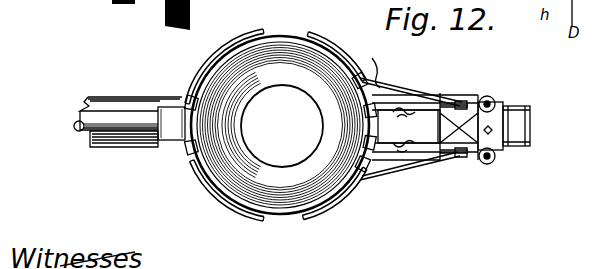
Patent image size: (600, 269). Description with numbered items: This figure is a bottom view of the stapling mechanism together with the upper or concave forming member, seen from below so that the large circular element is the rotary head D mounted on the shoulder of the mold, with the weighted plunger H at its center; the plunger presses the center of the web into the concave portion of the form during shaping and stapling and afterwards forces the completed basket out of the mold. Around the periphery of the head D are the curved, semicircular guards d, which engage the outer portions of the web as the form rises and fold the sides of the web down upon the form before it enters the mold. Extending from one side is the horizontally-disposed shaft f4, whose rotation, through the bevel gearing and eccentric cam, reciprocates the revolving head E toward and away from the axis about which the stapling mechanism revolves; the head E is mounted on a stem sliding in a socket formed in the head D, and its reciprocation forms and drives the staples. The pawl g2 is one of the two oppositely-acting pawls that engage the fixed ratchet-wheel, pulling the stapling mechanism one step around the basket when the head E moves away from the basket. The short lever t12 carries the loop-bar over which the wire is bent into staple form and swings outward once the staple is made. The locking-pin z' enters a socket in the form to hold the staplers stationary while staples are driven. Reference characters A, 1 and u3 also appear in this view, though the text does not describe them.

The axle housing A is at (103, 142).
The rotary head D is at (157, 141).
The horizontally-disposed shaft f4 is at (127, 118).
The curved guards d is at (232, 48).
The weighted plunger H is at (282, 126).
The bracket 1 is at (372, 63).
The pawl g2 is at (378, 90).
The short lever t12 is at (368, 200).
The pin u3 is at (479, 98).
The revolving head E is at (505, 120).
The locking-pin z' is at (522, 145).